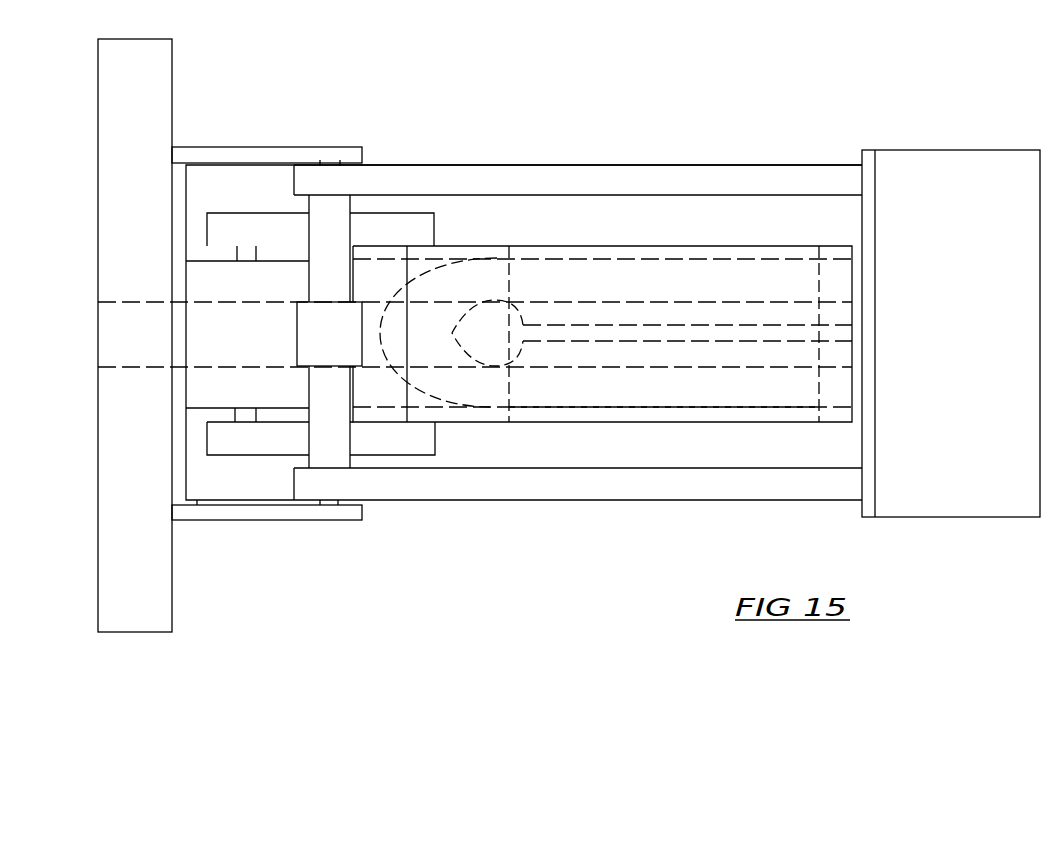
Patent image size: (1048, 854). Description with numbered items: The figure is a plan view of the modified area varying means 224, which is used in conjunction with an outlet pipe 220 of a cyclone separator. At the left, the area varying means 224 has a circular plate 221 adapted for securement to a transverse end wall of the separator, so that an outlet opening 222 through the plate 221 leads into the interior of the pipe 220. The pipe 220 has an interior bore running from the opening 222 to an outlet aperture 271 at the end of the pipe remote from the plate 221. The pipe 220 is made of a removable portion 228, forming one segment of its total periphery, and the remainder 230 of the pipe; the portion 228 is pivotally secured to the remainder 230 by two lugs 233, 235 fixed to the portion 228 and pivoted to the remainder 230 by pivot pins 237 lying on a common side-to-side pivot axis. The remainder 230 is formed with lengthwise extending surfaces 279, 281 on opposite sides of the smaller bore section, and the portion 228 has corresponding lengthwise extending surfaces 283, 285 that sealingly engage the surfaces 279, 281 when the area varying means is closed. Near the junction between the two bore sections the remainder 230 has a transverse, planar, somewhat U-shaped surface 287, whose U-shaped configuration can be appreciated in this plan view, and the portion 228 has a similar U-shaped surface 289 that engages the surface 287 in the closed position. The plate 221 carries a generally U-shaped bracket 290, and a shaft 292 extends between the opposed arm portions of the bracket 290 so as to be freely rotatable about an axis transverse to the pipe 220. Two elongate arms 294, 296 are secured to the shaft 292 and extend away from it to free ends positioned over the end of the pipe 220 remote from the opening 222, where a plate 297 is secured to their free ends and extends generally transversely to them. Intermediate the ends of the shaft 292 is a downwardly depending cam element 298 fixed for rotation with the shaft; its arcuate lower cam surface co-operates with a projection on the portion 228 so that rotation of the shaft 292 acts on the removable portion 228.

The outlet pipe 220 is at (546, 243).
The circular plate 221 is at (160, 580).
The outlet opening 222 is at (110, 323).
The area varying means 224 is at (478, 157).
The removable portion 228 is at (717, 388).
The pipe remainder 230 is at (198, 396).
The lug 233 is at (422, 445).
The lug 235 is at (430, 229).
The pivot pins 237 is at (249, 255).
The outlet aperture 271 is at (852, 333).
The lengthwise extending surface 279 is at (602, 424).
The lengthwise extending surface 283 is at (589, 390).
The lengthwise extending surface 281 is at (602, 239).
The lengthwise extending surface 285 is at (713, 268).
The U-shaped surface 287 is at (497, 332).
The U-shaped surface 289 is at (480, 297).
The U-shaped bracket 290 is at (213, 152).
The shaft 292 is at (342, 210).
The elongate arm 294 is at (702, 178).
The elongate arm 296 is at (742, 488).
The plate 297 is at (952, 502).
The cam element 298 is at (311, 329).